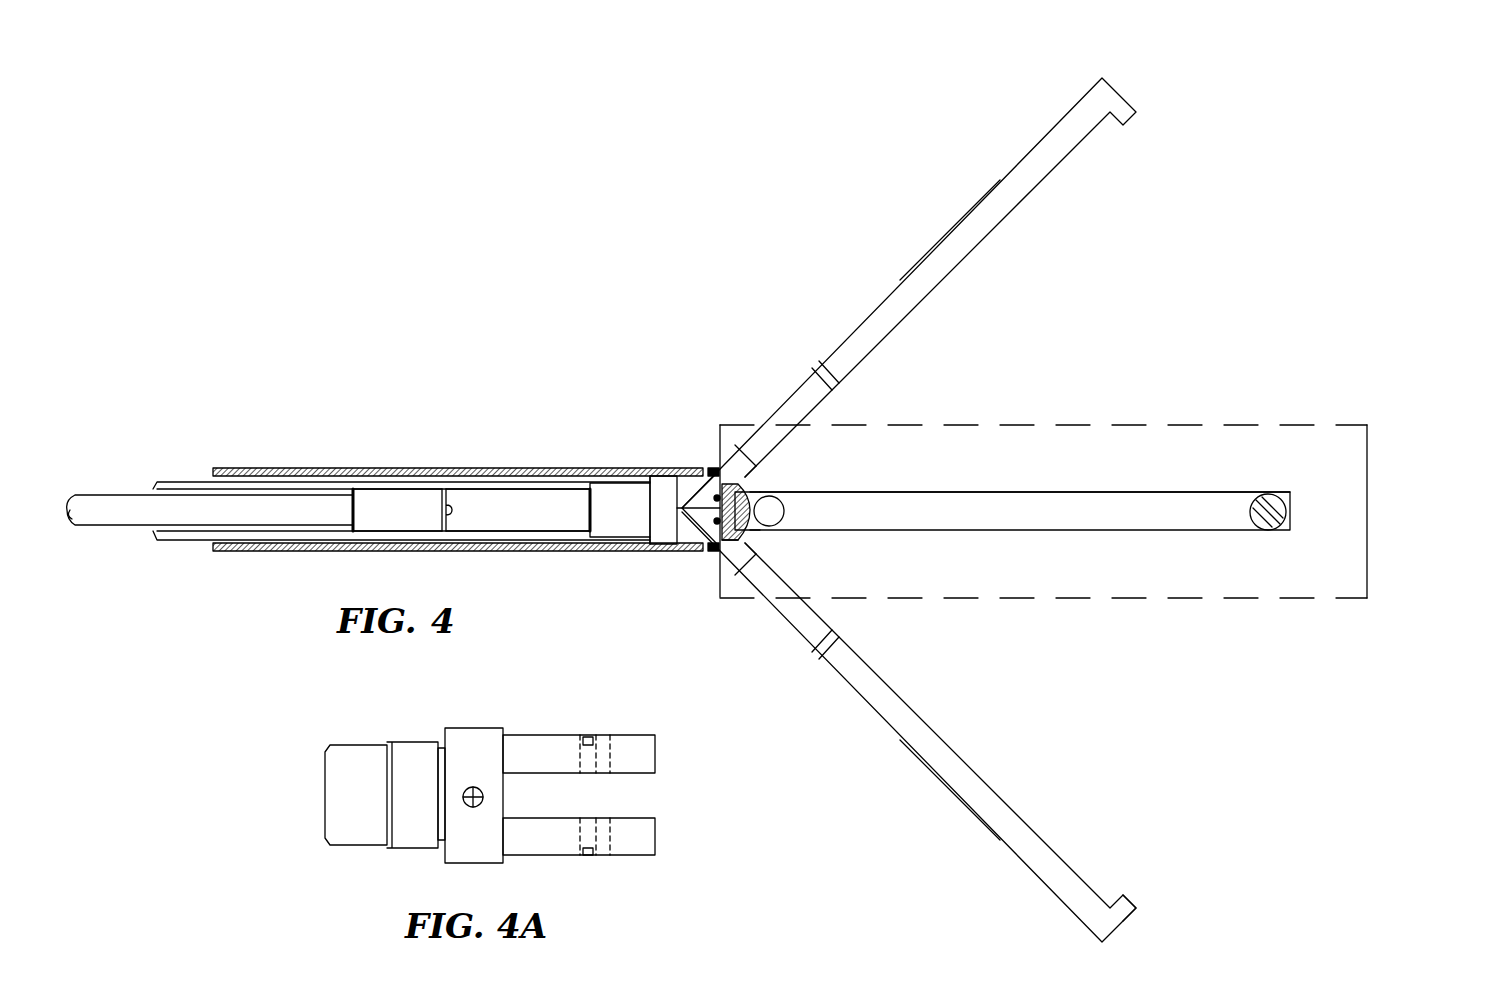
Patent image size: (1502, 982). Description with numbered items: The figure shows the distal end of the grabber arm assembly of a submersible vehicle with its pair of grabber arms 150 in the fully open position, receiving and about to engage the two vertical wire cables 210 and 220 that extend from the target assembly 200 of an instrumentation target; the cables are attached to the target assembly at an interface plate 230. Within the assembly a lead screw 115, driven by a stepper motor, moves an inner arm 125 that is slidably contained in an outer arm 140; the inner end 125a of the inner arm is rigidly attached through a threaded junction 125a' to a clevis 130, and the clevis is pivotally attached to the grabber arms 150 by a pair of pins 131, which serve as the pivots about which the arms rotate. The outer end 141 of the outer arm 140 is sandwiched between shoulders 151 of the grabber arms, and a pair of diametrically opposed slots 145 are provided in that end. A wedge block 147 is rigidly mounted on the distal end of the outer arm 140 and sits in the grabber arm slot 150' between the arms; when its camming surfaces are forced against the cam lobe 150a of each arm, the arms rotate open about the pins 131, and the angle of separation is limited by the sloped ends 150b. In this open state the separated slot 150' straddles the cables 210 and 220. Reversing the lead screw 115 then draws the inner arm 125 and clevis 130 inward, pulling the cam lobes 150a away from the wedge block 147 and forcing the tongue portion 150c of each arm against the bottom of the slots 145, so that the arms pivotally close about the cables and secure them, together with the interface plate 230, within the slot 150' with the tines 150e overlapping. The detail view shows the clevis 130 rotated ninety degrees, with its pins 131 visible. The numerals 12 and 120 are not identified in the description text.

In FIG. 4, the distal end of flexible tube 12 is at (655, 550).
In FIG. 4, the lead screw 115 is at (95, 528).
In FIG. 4, the chamber 120 is at (392, 488).
In FIG. 4, the inner arm 125 is at (185, 480).
In FIG. 4, the inner end of inner arm 125a is at (466, 488).
In FIG. 4, the threaded junction 125a' is at (620, 471).
In FIG. 4, the clevis 130 is at (625, 520).
In FIG. 4A, the clevis 130 is at (478, 730).
In FIG. 4, the pins 131 is at (732, 490).
In FIG. 4A, the pins 131 is at (591, 738).
In FIG. 4, the outer arm 140 is at (462, 480).
In FIG. 4, the outer end of outer arm 141 is at (663, 468).
In FIG. 4, the slots 145 is at (716, 472).
In FIG. 4, the wedge block 147 is at (785, 514).
In FIG. 4, the grabber arms 150 is at (909, 510).
In FIG. 4, the grabber arm slot 150' is at (994, 510).
In FIG. 4, the cam lobe 150a is at (750, 491).
In FIG. 4, the sloped ends 150b is at (720, 542).
In FIG. 4, the tongue portion 150c is at (750, 453).
In FIG. 4, the tines 150e is at (1128, 892).
In FIG. 4, the shoulders 151 is at (824, 360).
In FIG. 4, the target assembly 200 is at (1373, 473).
In FIG. 4, the cable 210 is at (840, 492).
In FIG. 4, the cable 220 is at (1258, 500).
In FIG. 4, the interface plate 230 is at (1000, 492).